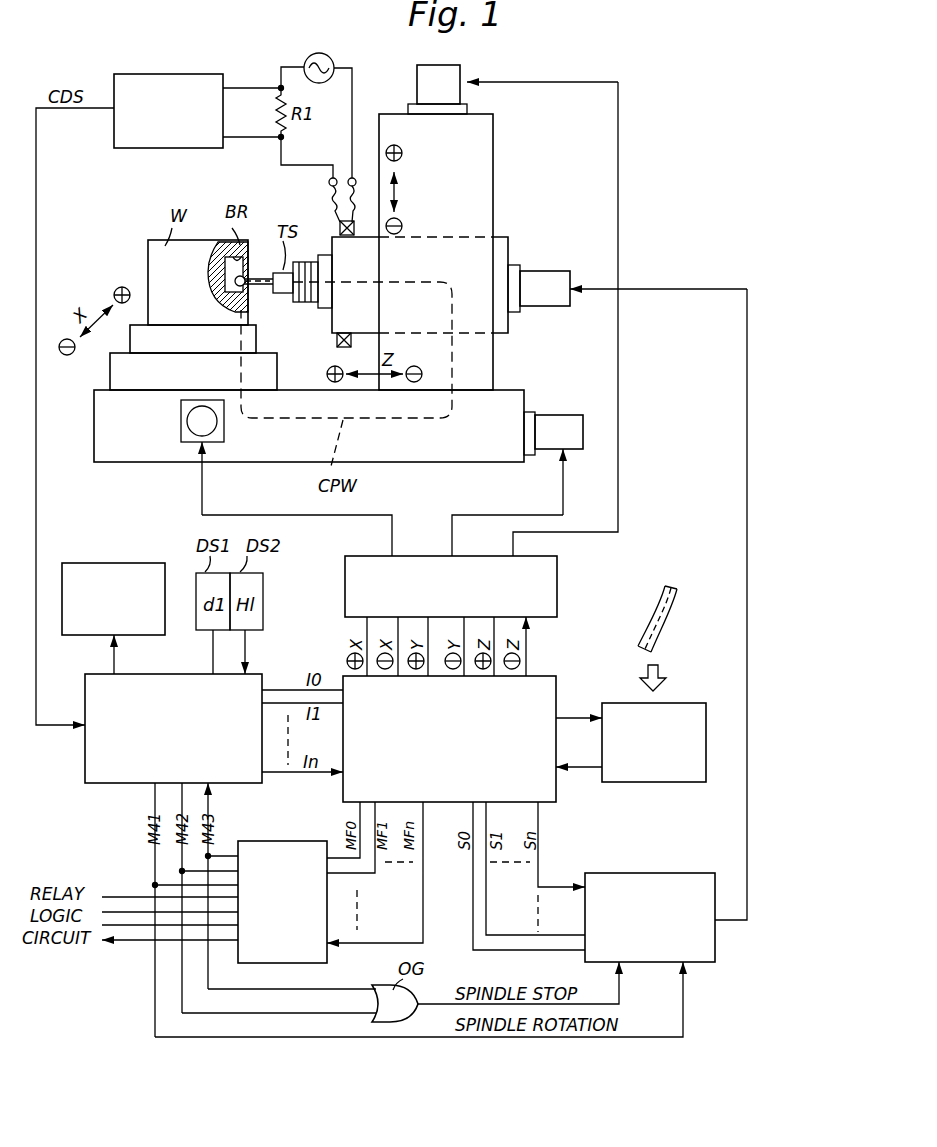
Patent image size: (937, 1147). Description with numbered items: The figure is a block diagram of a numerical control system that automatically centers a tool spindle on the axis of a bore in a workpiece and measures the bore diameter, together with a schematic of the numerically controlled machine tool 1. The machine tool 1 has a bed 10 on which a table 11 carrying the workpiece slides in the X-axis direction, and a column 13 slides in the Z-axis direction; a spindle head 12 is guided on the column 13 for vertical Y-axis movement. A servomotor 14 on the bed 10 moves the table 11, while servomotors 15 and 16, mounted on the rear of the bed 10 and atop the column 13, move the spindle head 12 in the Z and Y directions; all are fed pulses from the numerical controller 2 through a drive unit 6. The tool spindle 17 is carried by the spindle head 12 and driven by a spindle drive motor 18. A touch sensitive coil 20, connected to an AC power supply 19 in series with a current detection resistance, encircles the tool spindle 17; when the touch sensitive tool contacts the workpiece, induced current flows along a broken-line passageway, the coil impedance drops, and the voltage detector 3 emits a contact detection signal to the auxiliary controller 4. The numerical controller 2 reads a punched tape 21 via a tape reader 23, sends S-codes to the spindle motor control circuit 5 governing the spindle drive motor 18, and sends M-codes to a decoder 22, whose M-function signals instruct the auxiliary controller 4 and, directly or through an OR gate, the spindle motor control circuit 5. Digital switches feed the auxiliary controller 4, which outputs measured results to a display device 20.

The numerically controlled machine tool 1 is at (503, 197).
The numerical controller 2 is at (546, 686).
The voltage detector 3 is at (167, 76).
The auxiliary controller 4 is at (100, 776).
The spindle motor control circuit 5 is at (684, 874).
The drive unit 6 is at (557, 582).
The bed 10 is at (507, 396).
The table 11 is at (118, 370).
The spindle head 12 is at (507, 244).
The column 13 is at (493, 134).
The servomotor 14 is at (190, 422).
The servomotor 15 is at (575, 414).
The servomotor 16 is at (457, 73).
The tool spindle 17 is at (327, 306).
The spindle drive motor 18 is at (541, 298).
The AC power supply 19 is at (326, 54).
The touch sensitive coil 20 is at (340, 226).
The punched tape 21 is at (672, 600).
The decoder 22 is at (268, 847).
The tape reader 23 is at (645, 782).